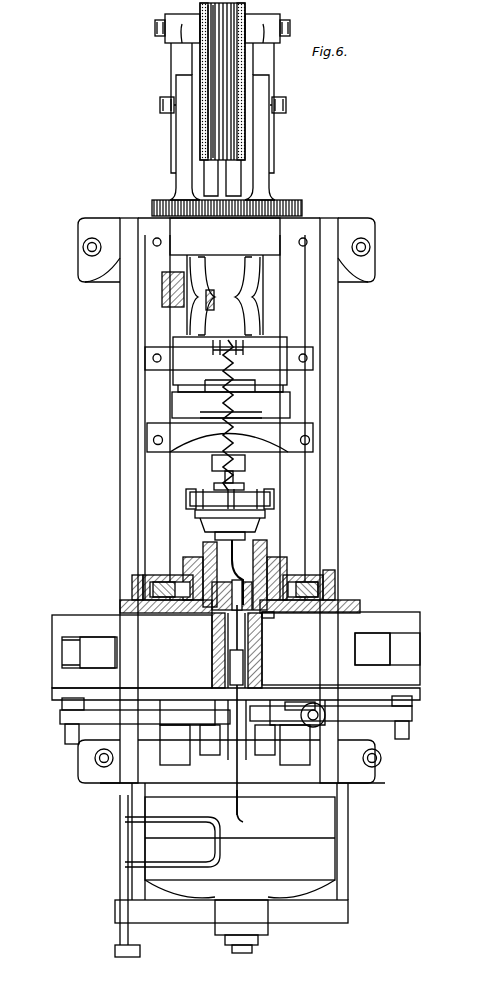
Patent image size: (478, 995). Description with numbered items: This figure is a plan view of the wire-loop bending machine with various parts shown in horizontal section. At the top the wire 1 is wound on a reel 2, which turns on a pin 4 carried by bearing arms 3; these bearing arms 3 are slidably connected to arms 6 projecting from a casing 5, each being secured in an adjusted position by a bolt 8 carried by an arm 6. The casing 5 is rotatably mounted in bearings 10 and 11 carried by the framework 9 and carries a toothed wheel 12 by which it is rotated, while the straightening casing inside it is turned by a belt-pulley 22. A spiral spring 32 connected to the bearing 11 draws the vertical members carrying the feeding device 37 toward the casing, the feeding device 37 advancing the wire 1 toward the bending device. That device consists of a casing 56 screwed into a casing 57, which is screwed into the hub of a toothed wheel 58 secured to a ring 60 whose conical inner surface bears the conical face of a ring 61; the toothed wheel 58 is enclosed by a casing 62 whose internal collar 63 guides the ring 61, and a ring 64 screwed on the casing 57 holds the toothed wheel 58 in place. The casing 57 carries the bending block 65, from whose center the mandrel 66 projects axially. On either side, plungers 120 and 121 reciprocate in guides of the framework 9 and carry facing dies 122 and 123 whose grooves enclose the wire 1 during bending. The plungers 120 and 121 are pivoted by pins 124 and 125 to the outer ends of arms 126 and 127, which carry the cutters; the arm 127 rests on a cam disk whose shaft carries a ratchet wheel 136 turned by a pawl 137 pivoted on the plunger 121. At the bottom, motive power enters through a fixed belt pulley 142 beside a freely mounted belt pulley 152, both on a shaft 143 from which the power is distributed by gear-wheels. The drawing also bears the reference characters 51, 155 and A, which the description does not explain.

The wire 1 is at (243, 131).
The reel 2 is at (205, 131).
The bearing arms 3 is at (176, 40).
The pin 4 is at (155, 27).
The casing 5 is at (223, 305).
The arms 6 is at (180, 191).
The bolt 8 is at (160, 101).
The framework 9 is at (132, 346).
The bearing 10 is at (258, 243).
The bearing 11 is at (262, 362).
The toothed wheel 12 is at (302, 207).
The belt-pulley 22 is at (212, 407).
The spiral spring 32 is at (228, 457).
The feeding device 37 is at (218, 493).
The shaft 51 is at (244, 500).
The casing 56 is at (256, 546).
The casing 57 is at (262, 556).
The toothed wheel 58 is at (282, 560).
The ring 60 is at (170, 613).
The ring 61 is at (150, 578).
The casing 62 is at (333, 582).
The collar 63 is at (218, 610).
The ring 64 is at (204, 556).
The bending block 65 is at (277, 614).
The mandrel 66 is at (230, 655).
The plunger 120 is at (142, 637).
The plunger 121 is at (330, 640).
The die 122 is at (212, 672).
The die 123 is at (262, 672).
The pin 124 is at (72, 656).
The pin 125 is at (395, 650).
The arm 126 is at (62, 722).
The arm 127 is at (395, 716).
The ratchet wheel 136 is at (340, 705).
The pawl 137 is at (292, 700).
The fixed belt pulley 142 is at (320, 818).
The shaft 143 is at (258, 950).
The freely mounted belt pulley 152 is at (310, 852).
The contact piece 155 is at (266, 618).
The wire end A is at (240, 815).